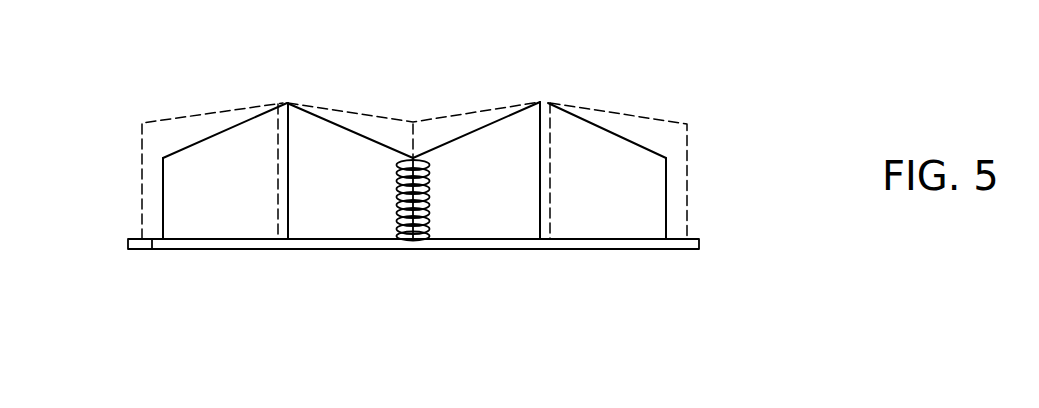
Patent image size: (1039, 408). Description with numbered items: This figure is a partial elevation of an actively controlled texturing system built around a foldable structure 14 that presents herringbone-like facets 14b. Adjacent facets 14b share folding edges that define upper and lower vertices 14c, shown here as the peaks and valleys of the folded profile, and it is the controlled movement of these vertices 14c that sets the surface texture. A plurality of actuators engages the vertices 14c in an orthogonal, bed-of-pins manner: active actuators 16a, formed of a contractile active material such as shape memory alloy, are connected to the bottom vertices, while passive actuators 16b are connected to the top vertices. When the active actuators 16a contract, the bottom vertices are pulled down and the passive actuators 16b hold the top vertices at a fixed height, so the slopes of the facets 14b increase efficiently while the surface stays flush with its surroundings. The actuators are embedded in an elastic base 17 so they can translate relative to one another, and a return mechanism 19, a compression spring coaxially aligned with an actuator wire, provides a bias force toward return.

The structure 14 is at (598, 128).
The facets 14b is at (228, 120).
The vertices 14c is at (413, 158).
The active actuators 16a is at (666, 192).
The passive actuators 16b is at (540, 187).
The elastic base 17 is at (429, 182).
The return mechanism 19 is at (670, 249).